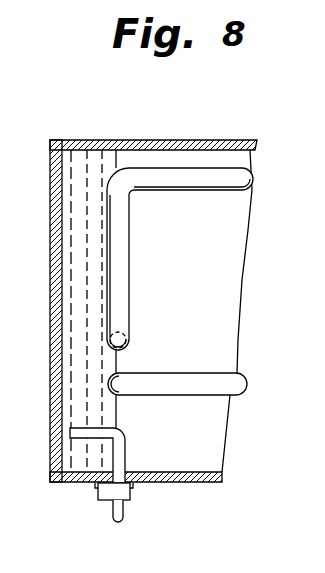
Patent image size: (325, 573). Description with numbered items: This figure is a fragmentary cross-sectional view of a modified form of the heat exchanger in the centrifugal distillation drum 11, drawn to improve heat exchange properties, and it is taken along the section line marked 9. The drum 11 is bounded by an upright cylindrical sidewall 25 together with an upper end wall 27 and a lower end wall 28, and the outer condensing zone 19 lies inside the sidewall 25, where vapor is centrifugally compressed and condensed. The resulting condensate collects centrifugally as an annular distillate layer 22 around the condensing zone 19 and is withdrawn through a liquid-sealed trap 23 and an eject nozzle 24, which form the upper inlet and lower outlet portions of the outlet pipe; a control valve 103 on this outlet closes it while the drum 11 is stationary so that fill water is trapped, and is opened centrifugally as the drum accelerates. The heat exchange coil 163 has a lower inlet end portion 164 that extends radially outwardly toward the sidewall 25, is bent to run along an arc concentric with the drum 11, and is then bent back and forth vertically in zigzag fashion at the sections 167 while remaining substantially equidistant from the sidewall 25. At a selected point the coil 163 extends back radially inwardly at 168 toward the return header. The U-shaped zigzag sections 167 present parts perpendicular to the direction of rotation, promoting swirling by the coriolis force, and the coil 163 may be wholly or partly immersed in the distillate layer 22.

The section line 9- 9 is at (190, 135).
The drum 11 is at (143, 304).
The condensing zone 19 is at (200, 303).
The distillate layer 22 is at (72, 296).
The liquid-sealed trap 23 is at (126, 440).
The eject nozzle 24 is at (113, 510).
The cylindrical sidewall 25 is at (55, 380).
The upper end wall 27 is at (232, 141).
The lower end wall 28 is at (221, 483).
The control valve 103 is at (131, 492).
The heat exchange coil 163 is at (180, 259).
The inlet end portion 164 is at (140, 378).
The zigzag section 167 is at (128, 300).
The return portion 168 is at (180, 259).